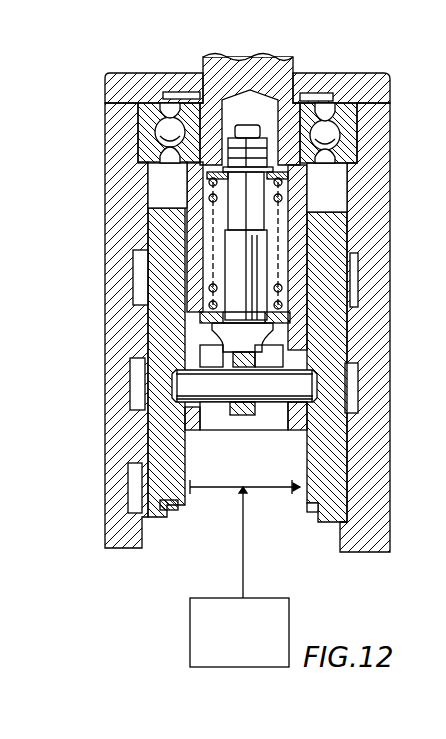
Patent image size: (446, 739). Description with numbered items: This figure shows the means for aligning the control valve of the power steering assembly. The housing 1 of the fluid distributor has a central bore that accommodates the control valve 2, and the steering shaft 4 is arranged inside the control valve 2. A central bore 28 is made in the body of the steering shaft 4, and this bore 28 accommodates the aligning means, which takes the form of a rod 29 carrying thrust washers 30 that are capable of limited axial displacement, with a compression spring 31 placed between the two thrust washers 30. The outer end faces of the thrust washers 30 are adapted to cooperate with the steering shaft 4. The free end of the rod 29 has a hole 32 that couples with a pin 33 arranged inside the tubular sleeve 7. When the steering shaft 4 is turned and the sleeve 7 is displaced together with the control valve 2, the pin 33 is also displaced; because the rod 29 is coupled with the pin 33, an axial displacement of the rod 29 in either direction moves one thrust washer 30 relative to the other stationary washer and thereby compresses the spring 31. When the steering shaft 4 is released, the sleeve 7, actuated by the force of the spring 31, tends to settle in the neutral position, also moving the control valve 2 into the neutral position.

The housing 1 is at (118, 116).
The control valve 2 is at (140, 223).
The steering shaft 4 is at (293, 60).
The tubular sleeve 7 is at (300, 465).
The central bore 28 is at (293, 245).
The rod 29 is at (233, 220).
The thrust washers 30 is at (340, 145).
The compression spring 31 is at (300, 193).
The hole 32 is at (243, 430).
The pin 33 is at (352, 398).